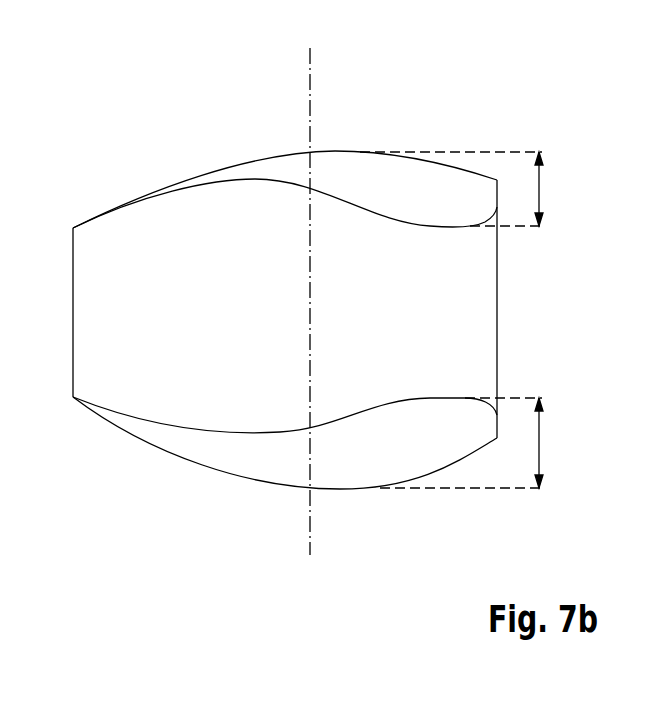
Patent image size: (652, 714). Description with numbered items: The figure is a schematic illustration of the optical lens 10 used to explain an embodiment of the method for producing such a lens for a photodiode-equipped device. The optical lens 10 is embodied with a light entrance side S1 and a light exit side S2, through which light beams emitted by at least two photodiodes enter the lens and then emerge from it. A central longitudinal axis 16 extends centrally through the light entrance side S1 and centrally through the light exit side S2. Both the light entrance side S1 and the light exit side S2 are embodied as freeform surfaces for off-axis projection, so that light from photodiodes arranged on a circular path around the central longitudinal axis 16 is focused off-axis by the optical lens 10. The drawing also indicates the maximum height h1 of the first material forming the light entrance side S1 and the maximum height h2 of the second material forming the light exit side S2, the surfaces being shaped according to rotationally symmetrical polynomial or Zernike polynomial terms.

The optical lens 10 is at (398, 98).
The central longitudinal axis 16 is at (309, 57).
The light entrance side S1 is at (163, 456).
The light exit side S2 is at (190, 171).
The maximum height of the first material h1 is at (541, 443).
The maximum height of the second material h2 is at (541, 190).